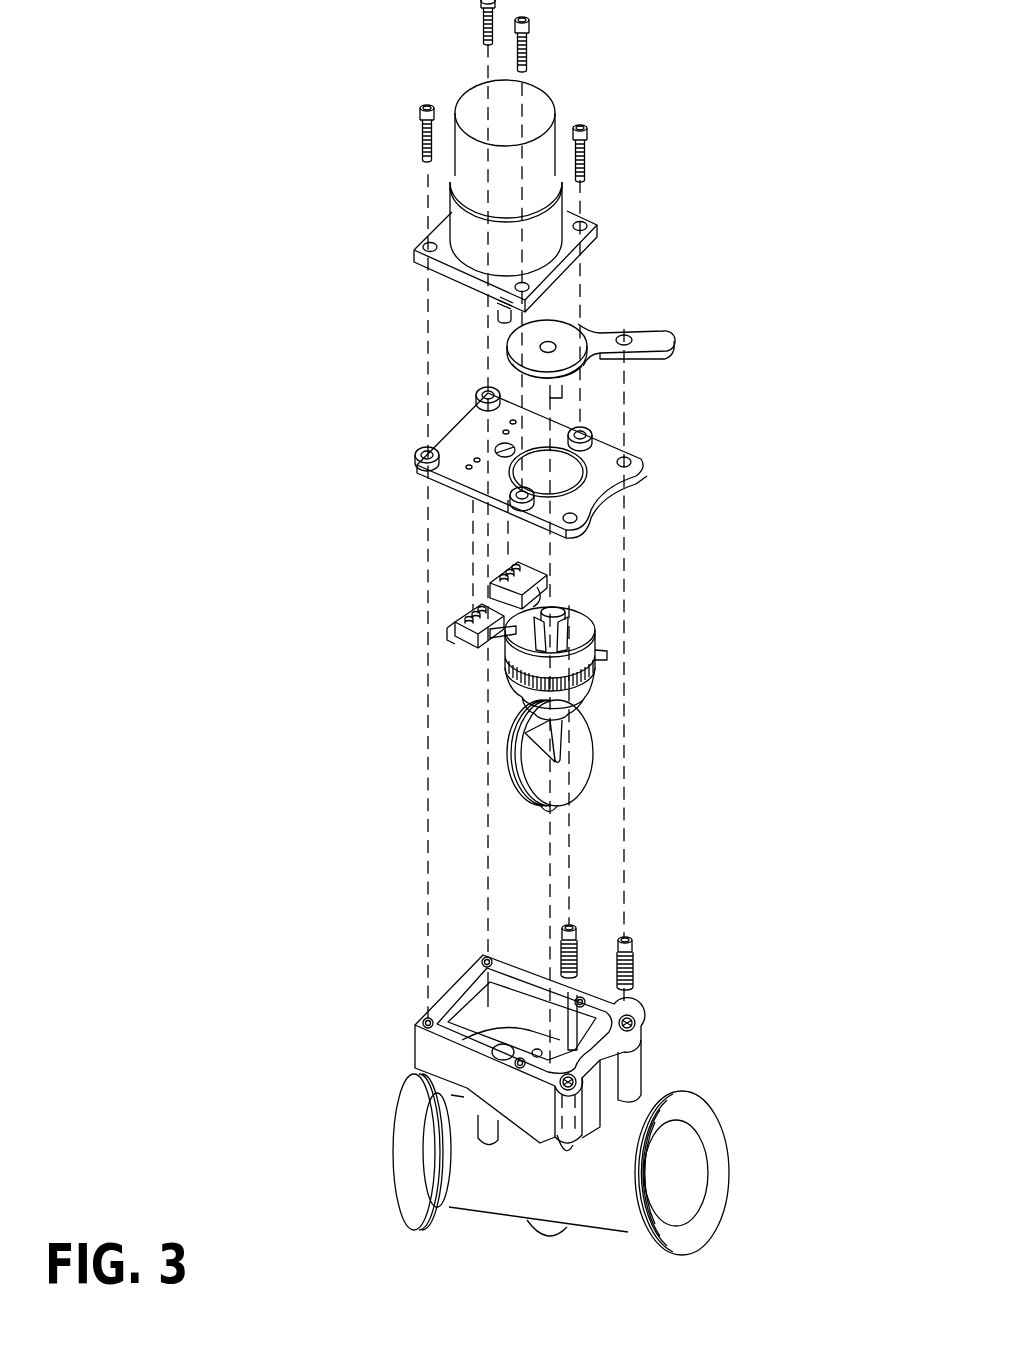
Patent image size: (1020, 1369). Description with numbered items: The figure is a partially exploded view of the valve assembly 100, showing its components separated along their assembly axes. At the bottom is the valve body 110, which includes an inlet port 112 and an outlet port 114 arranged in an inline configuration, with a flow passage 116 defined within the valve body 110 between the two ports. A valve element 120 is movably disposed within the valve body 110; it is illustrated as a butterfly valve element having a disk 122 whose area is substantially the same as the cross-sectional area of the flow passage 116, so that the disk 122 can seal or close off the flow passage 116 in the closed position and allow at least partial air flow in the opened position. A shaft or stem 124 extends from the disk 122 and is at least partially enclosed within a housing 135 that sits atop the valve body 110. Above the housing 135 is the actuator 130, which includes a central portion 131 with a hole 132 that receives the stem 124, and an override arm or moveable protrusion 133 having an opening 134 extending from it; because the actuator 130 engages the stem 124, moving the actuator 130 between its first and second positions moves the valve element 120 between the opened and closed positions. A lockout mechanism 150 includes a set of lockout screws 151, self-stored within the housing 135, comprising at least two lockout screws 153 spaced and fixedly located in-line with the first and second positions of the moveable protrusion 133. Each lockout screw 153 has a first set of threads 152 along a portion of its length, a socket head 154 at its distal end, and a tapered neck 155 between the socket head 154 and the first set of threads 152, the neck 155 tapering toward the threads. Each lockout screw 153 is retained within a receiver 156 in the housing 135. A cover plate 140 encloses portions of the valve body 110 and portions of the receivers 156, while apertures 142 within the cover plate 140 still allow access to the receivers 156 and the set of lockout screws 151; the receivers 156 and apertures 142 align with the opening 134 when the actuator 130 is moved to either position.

The valve assembly 100 is at (508, 627).
The valve body 110 is at (569, 1135).
The inlet port 112 is at (397, 1120).
The outlet port 114 is at (739, 1173).
The flow passage 116 is at (655, 1192).
The valve element 120 is at (542, 756).
The disk 122 is at (518, 758).
The stem 124 is at (560, 622).
The actuator 130 is at (552, 281).
The central portion 131 is at (532, 365).
The hole 132 is at (540, 347).
The moveable protrusion 133 is at (673, 333).
The opening 134 is at (630, 338).
The housing 135 is at (522, 1031).
The cover plate 140 is at (579, 462).
The apertures 142 is at (585, 517).
The lockout mechanism 150 is at (719, 895).
The set of lockout screws 151 is at (632, 922).
The first set of threads 152 is at (633, 972).
The lockout screw 153 is at (627, 945).
The socket head 154 is at (627, 943).
The neck 155 is at (632, 957).
The receiver 156 is at (636, 1023).